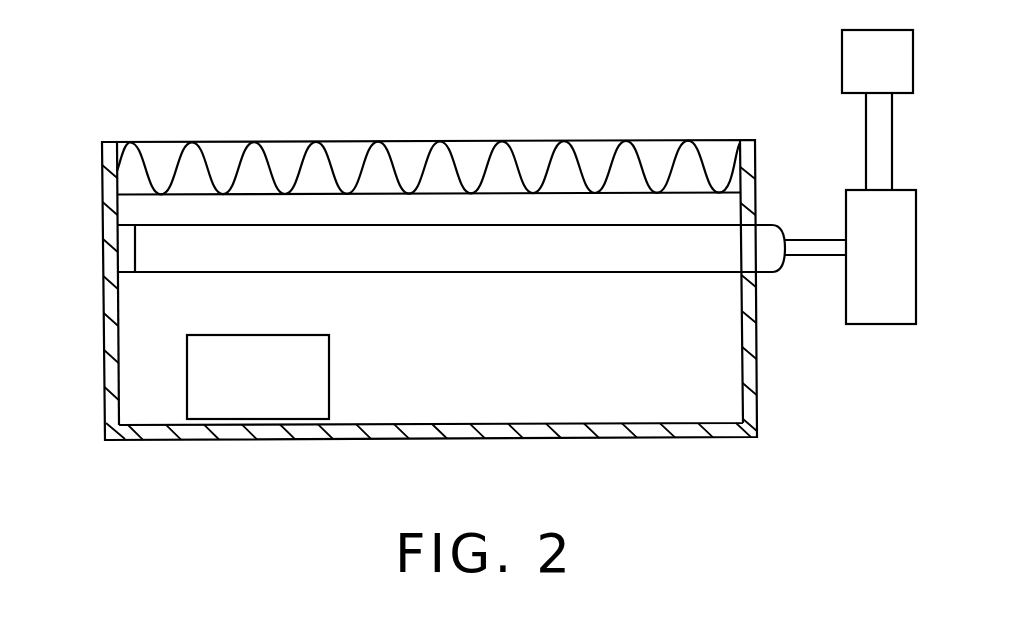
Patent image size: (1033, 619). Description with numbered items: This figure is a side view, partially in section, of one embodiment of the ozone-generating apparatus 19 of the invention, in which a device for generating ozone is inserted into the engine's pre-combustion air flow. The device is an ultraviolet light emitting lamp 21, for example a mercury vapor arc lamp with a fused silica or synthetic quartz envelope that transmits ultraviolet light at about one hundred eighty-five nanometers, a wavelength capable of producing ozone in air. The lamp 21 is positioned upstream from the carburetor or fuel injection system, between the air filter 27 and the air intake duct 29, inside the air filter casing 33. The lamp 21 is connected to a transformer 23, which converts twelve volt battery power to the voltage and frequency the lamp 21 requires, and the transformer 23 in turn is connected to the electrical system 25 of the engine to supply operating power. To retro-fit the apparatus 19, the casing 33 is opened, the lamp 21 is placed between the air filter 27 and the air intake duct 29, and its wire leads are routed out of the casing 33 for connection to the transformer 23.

The apparatus 19 is at (397, 298).
The ultraviolet light emitting lamp 21 is at (502, 263).
The transformer 23 is at (897, 292).
The electrical system 25 is at (892, 75).
The air filter 27 is at (595, 152).
The air intake duct 29 is at (277, 393).
The air filter casing 33 is at (112, 303).